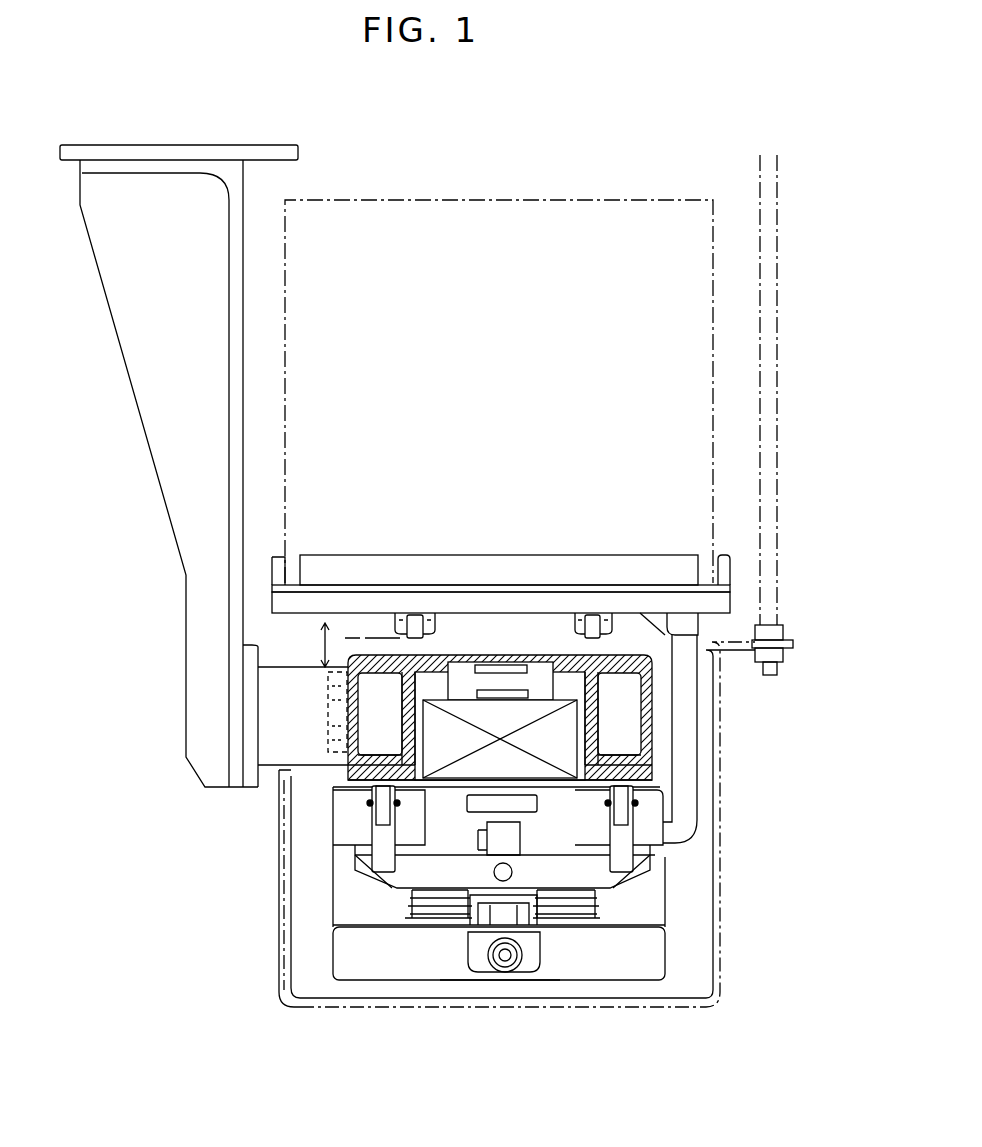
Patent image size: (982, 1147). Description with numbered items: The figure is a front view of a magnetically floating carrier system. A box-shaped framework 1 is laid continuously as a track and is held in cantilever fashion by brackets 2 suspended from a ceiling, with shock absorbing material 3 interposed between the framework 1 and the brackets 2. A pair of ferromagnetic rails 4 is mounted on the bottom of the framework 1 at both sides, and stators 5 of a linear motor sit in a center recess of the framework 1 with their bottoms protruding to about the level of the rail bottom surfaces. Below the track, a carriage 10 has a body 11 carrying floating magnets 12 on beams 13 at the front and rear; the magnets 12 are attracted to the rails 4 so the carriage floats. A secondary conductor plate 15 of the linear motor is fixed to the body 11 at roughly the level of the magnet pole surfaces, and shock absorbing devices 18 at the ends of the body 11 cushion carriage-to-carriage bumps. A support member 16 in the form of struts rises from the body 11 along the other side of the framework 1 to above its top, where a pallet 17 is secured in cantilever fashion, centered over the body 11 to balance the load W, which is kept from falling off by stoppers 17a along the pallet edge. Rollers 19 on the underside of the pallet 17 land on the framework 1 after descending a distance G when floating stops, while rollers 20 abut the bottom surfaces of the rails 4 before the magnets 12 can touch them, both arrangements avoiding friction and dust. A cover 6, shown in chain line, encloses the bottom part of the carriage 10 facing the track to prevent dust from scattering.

The framework 1 is at (337, 765).
The brackets 2 is at (180, 506).
The shock absorbing material 3 is at (337, 720).
The rails 4 is at (355, 775).
The stators 5 is at (497, 718).
The cover 6 is at (279, 990).
The carriage 10 is at (472, 995).
The body 11 is at (390, 968).
The floating magnets 12 is at (663, 845).
The beams 13 is at (607, 880).
The secondary conductor plate 15 is at (460, 790).
The support member 16 is at (680, 720).
The pallet 17 is at (630, 600).
The stoppers 17a is at (282, 560).
The shock absorbing devices 18 is at (510, 968).
The rollers 19 is at (411, 628).
The rollers 20 is at (622, 812).
The distance G is at (348, 645).
The load W is at (587, 212).